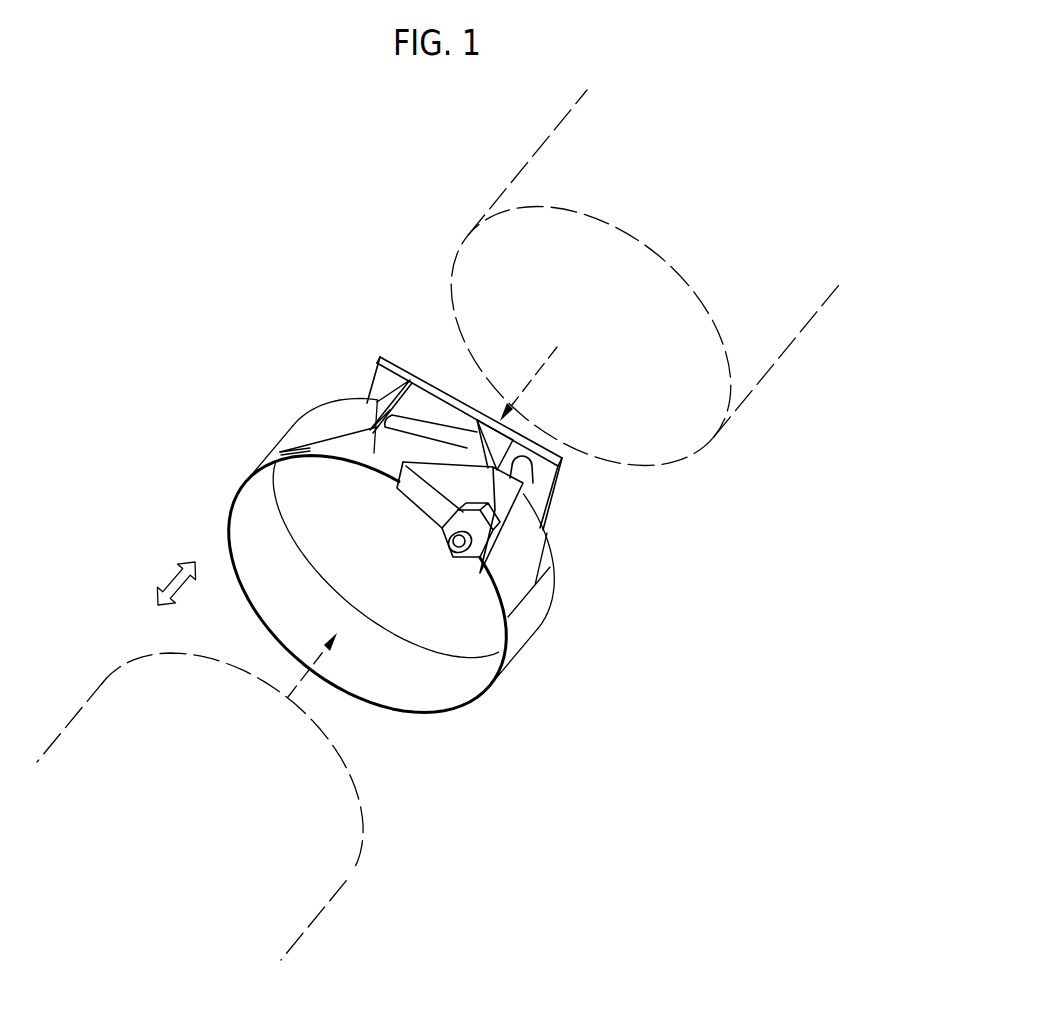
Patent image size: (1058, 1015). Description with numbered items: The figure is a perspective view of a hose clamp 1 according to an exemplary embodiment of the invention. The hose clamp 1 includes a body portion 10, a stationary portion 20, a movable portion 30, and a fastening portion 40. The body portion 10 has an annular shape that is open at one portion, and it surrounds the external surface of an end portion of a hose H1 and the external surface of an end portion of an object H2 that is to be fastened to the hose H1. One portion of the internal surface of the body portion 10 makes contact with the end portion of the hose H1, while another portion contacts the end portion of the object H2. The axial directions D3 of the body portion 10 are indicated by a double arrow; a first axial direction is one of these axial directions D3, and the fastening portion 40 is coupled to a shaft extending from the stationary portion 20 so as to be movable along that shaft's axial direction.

The hose clamp 1 is at (438, 801).
The body portion 10 is at (490, 716).
The stationary portion 20 is at (578, 478).
The movable portion 30 is at (478, 436).
The fastening portion 40 is at (528, 540).
The hose H1 is at (136, 656).
The object H2 is at (452, 277).
The axial directions D3 is at (182, 589).